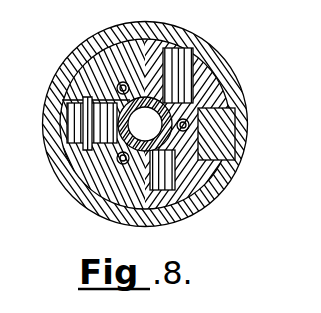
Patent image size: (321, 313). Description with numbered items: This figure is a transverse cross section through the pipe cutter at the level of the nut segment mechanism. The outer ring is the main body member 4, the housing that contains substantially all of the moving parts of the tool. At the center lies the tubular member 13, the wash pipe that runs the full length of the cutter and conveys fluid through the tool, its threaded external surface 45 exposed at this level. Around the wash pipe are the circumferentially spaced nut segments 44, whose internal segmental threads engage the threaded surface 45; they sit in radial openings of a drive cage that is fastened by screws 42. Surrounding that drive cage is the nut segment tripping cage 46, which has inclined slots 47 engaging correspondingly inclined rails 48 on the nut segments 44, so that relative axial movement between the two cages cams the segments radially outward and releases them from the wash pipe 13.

The main body member 4 is at (222, 74).
The tubular member 13 is at (117, 128).
The screws 42 is at (100, 170).
The nut segments 44 is at (185, 63).
The threaded external surface 45 is at (188, 126).
The nut segment tripping cage 46 is at (215, 120).
The inclined slots 47 is at (190, 88).
The inclined rails 48 is at (193, 166).